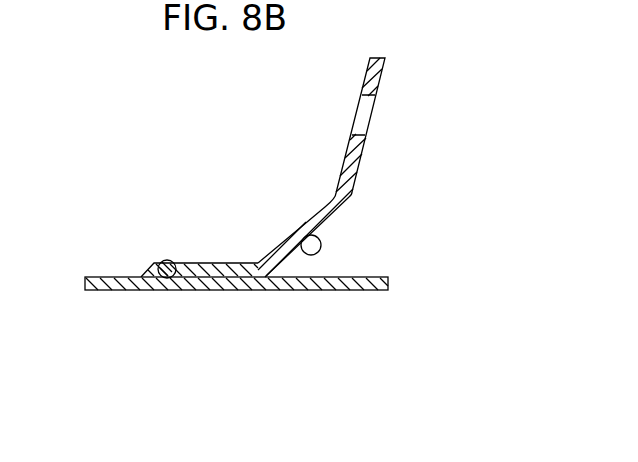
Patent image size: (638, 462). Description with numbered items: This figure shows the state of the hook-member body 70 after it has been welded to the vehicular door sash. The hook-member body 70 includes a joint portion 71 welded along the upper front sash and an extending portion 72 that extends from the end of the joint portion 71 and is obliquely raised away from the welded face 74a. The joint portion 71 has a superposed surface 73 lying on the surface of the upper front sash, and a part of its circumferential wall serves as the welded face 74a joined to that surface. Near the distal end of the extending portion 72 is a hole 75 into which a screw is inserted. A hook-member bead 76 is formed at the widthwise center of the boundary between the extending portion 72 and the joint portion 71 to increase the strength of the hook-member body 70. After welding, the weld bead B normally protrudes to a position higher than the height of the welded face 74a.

The hook-member body 70 is at (251, 297).
The joint portion 71 is at (232, 272).
The extending portion 72 is at (350, 168).
The superposed surface 73 is at (190, 276).
The welded face 74a is at (137, 280).
The hole 75 is at (369, 113).
The hook-member bead 76 is at (299, 243).
The weld bead B is at (163, 260).